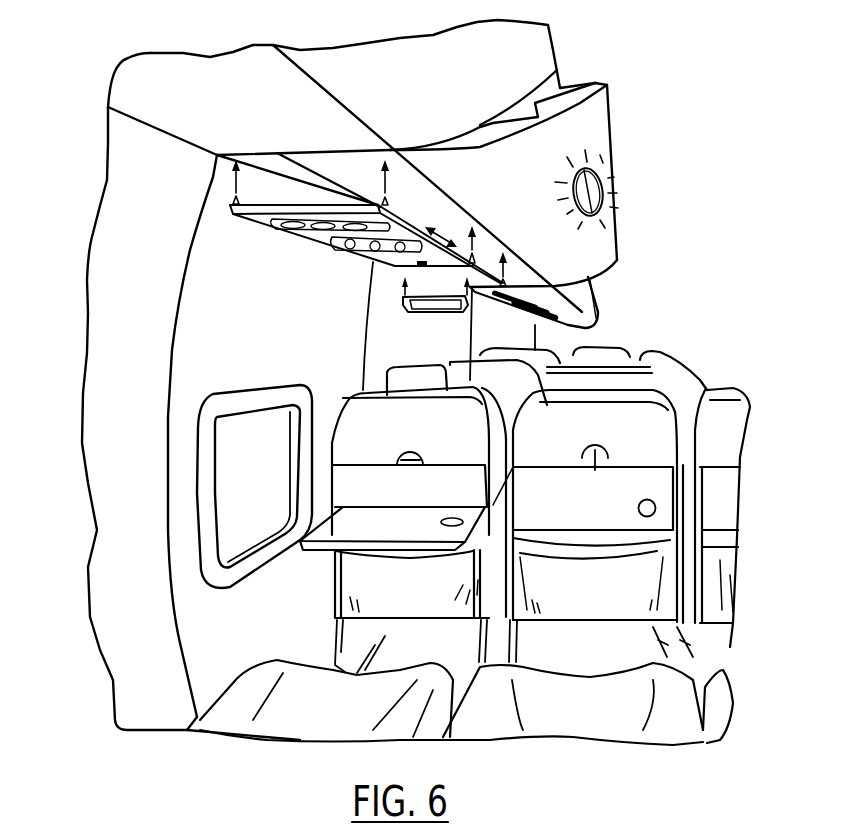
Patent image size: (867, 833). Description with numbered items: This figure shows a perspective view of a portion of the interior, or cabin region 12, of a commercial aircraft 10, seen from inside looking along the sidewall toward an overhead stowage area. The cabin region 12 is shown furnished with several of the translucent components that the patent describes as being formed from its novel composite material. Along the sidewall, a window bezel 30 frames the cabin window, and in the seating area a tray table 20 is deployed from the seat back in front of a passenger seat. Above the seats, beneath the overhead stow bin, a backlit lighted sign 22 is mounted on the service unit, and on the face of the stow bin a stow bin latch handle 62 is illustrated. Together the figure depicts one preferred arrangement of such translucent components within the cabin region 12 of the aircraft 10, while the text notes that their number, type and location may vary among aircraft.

The commercial aircraft 10 is at (678, 91).
The cabin region 12 is at (110, 537).
The tray table 20 is at (318, 548).
The backlit lighted sign 22 is at (433, 316).
The window bezel 30 is at (271, 388).
The stow bin latch handle 62 is at (603, 187).